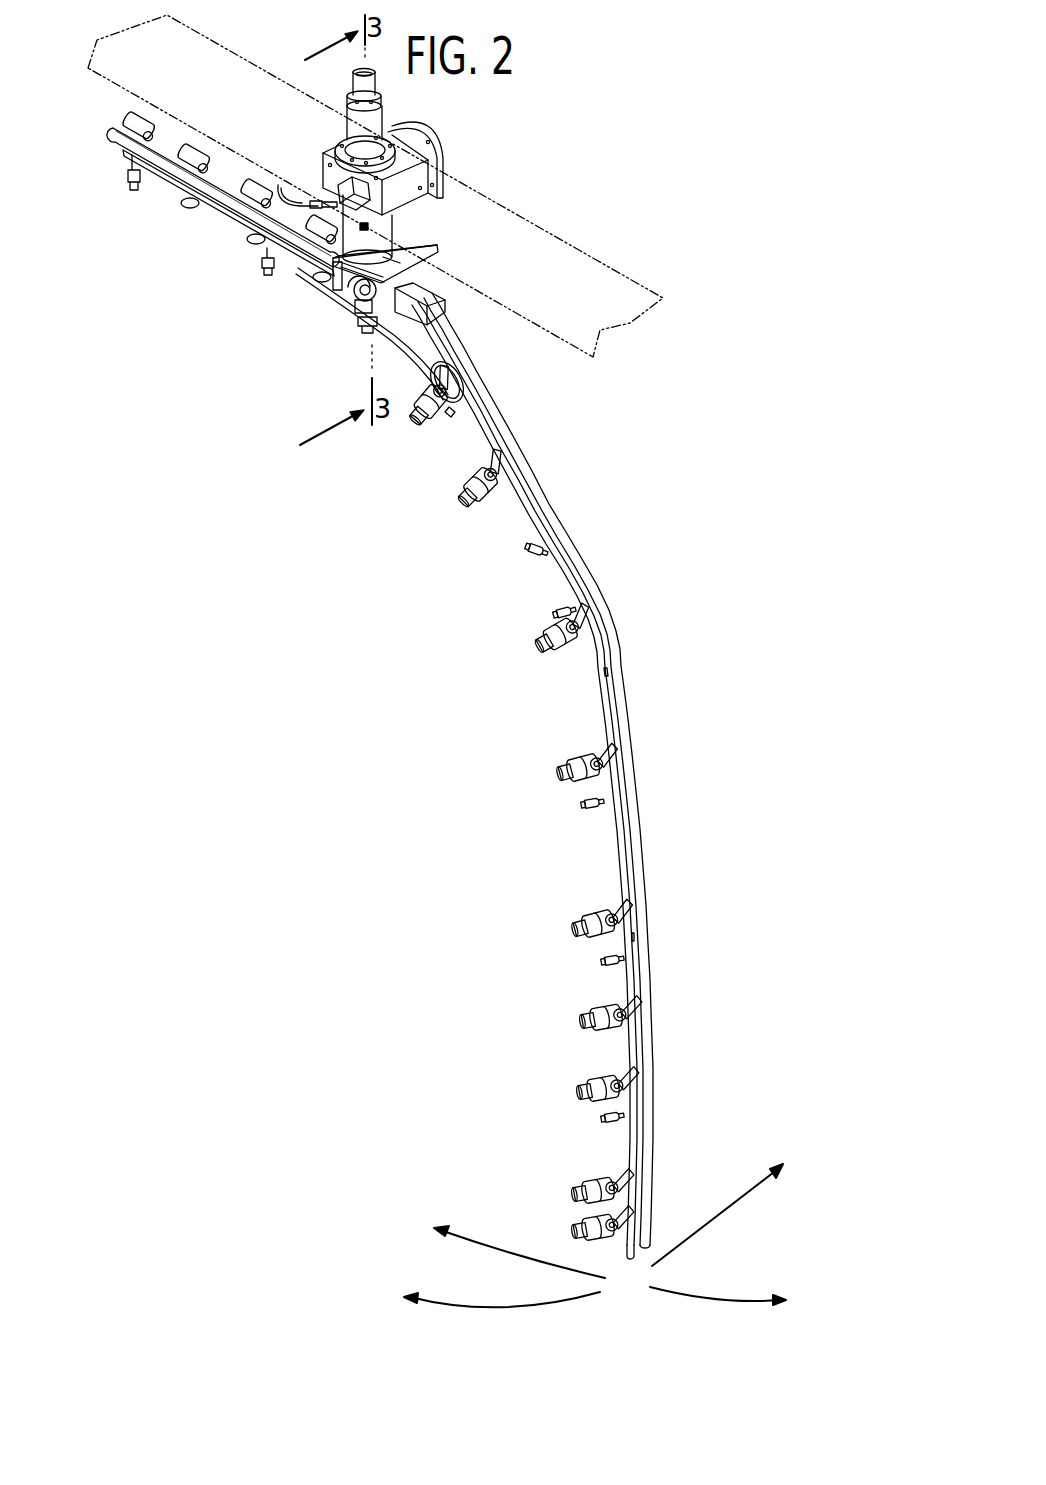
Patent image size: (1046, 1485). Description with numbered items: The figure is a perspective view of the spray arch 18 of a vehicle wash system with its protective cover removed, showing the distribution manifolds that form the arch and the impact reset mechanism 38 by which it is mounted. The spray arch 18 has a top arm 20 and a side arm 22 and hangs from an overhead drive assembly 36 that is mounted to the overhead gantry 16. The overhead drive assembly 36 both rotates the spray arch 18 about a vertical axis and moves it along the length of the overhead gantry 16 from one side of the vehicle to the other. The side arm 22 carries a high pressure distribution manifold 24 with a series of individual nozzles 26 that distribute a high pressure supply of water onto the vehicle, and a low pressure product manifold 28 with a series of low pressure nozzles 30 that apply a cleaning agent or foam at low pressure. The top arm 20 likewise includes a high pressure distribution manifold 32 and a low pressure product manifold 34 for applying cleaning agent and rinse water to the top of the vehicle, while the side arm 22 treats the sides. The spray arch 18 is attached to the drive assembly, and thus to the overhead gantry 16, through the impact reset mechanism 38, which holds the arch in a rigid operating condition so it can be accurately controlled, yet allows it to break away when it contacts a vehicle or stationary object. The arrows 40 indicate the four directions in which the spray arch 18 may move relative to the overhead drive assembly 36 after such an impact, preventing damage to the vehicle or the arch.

The overhead gantry 16 is at (563, 267).
The spray arch 18 is at (506, 763).
The top arm 20 is at (213, 209).
The side arm 22 is at (506, 763).
The high pressure distribution manifold 24 is at (617, 717).
The nozzles 26 is at (570, 764).
The low pressure product manifold 28 is at (553, 548).
The low pressure nozzles 30 is at (591, 806).
The high pressure distribution manifold 32 is at (160, 157).
The low pressure product manifold 34 is at (218, 205).
The overhead drive assembly 36 is at (450, 135).
The impact reset mechanism 38 is at (323, 311).
The arrows 40 is at (523, 1255).